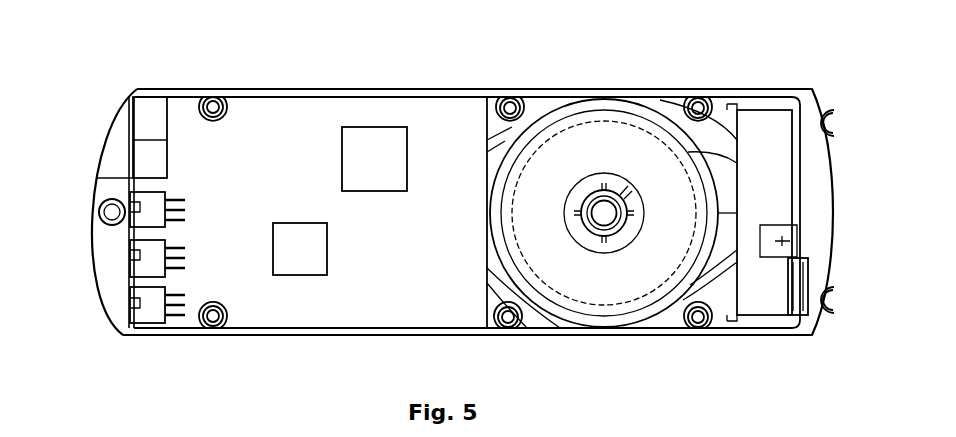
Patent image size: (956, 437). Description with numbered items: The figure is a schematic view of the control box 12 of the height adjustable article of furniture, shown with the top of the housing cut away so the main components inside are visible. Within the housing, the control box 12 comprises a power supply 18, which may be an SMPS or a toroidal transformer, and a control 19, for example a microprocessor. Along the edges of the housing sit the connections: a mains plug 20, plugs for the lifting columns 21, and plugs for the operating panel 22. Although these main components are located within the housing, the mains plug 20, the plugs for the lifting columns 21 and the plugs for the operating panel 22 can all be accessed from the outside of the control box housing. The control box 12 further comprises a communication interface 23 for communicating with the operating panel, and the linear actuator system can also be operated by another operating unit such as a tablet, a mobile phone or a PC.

The control box 12 is at (345, 66).
The power supply 18 is at (624, 290).
The control 19 is at (385, 135).
The mains plug 20 is at (798, 277).
The plugs for the lifting columns 21 is at (150, 312).
The plugs for the operating panel 22 is at (150, 158).
The communication interface 23 is at (285, 262).